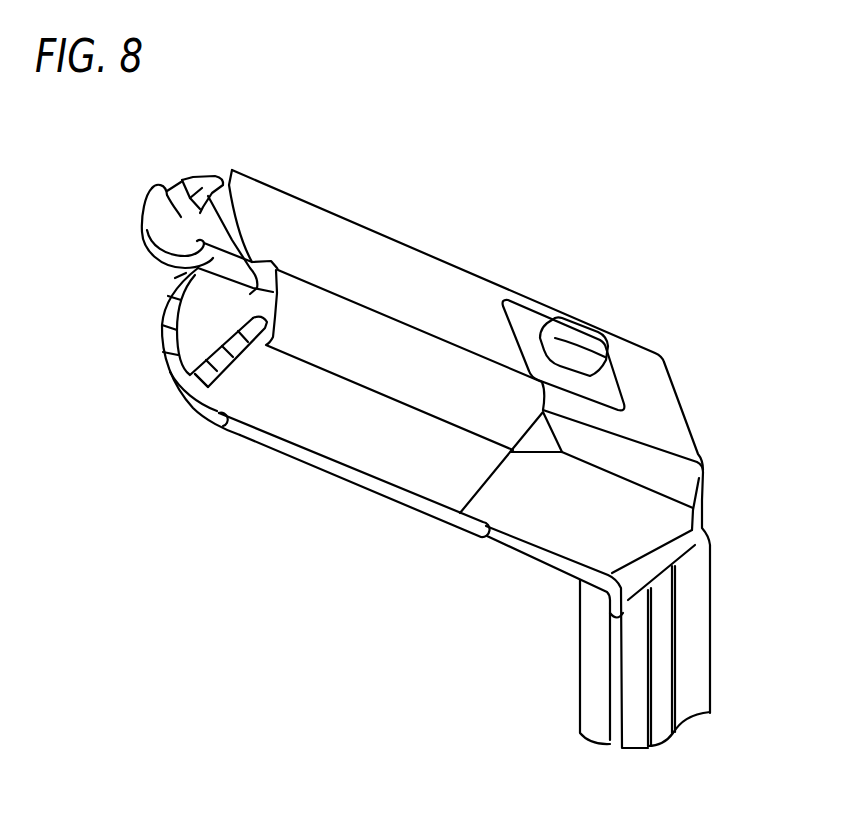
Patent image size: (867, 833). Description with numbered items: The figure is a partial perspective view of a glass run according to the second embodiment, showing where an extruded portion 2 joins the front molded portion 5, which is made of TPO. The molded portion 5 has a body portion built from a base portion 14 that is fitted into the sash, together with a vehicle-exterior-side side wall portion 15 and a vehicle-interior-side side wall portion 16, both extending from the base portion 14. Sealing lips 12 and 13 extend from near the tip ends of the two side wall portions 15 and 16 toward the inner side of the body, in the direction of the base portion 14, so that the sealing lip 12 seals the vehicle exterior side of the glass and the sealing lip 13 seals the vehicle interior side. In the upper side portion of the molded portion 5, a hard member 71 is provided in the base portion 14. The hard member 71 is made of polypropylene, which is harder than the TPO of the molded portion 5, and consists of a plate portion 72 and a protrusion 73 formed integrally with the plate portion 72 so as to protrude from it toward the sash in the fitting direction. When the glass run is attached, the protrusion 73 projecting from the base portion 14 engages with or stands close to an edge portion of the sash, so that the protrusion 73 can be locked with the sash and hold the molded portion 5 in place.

The extruded portion 2 is at (300, 156).
The front molded portion 5 is at (717, 374).
The sealing lip 12 is at (142, 240).
The sealing lip 13 is at (167, 334).
The base portion 14 is at (416, 272).
The vehicle-exterior-side side wall portion 15 is at (182, 180).
The vehicle-interior-side side wall portion 16 is at (197, 378).
The hard member 71 is at (610, 250).
The plate portion 72 is at (525, 313).
The protrusion 73 is at (594, 340).